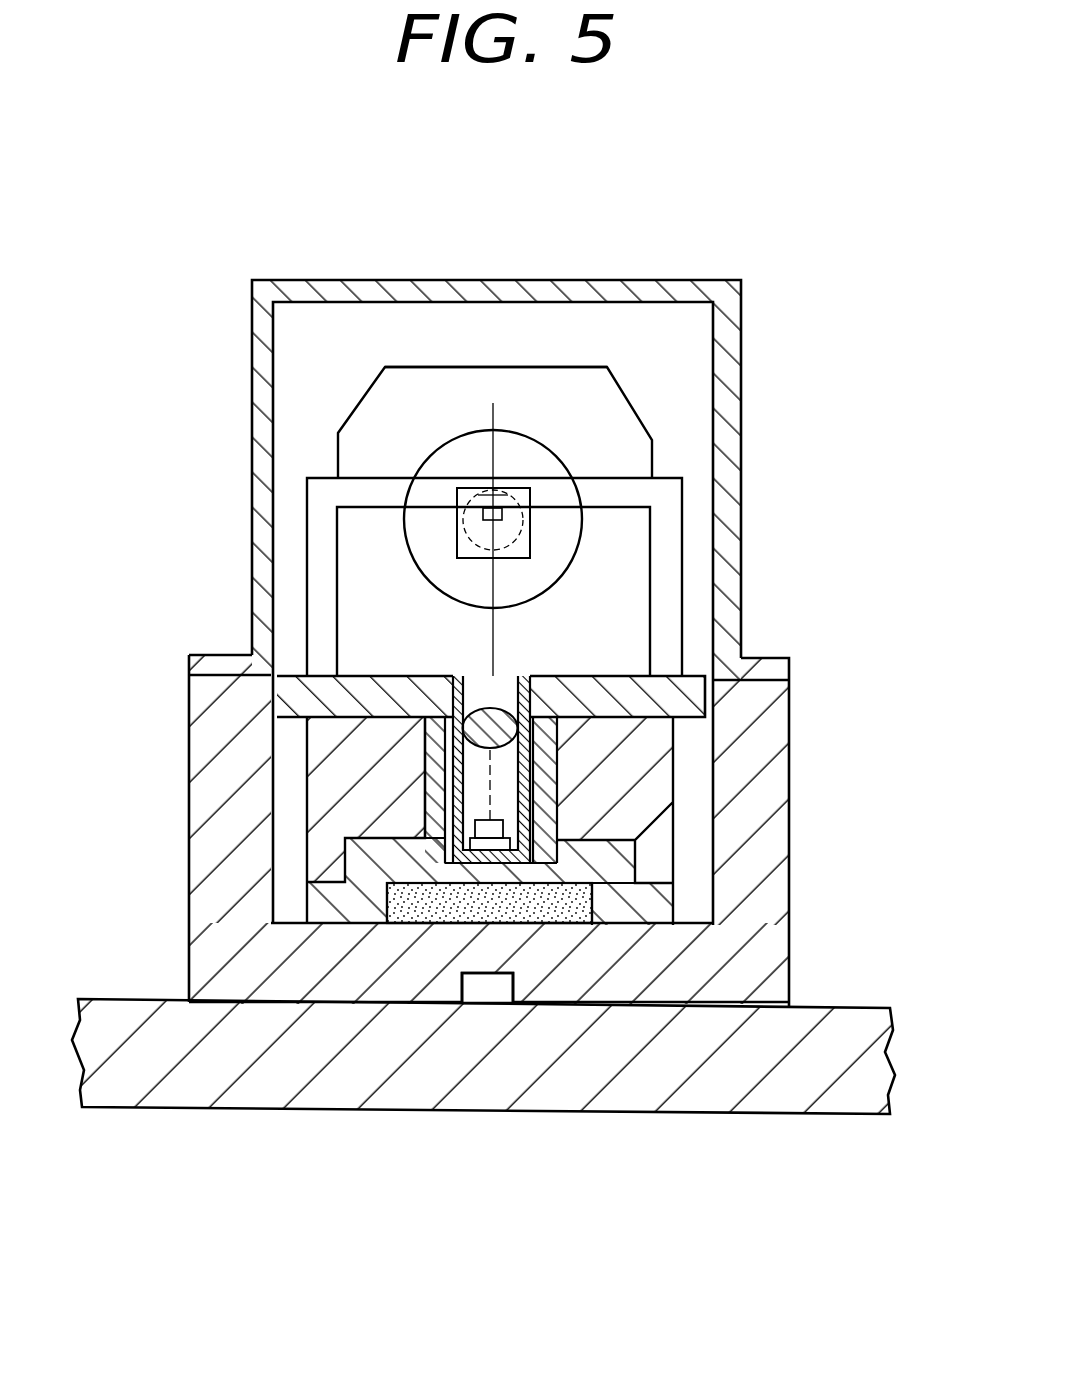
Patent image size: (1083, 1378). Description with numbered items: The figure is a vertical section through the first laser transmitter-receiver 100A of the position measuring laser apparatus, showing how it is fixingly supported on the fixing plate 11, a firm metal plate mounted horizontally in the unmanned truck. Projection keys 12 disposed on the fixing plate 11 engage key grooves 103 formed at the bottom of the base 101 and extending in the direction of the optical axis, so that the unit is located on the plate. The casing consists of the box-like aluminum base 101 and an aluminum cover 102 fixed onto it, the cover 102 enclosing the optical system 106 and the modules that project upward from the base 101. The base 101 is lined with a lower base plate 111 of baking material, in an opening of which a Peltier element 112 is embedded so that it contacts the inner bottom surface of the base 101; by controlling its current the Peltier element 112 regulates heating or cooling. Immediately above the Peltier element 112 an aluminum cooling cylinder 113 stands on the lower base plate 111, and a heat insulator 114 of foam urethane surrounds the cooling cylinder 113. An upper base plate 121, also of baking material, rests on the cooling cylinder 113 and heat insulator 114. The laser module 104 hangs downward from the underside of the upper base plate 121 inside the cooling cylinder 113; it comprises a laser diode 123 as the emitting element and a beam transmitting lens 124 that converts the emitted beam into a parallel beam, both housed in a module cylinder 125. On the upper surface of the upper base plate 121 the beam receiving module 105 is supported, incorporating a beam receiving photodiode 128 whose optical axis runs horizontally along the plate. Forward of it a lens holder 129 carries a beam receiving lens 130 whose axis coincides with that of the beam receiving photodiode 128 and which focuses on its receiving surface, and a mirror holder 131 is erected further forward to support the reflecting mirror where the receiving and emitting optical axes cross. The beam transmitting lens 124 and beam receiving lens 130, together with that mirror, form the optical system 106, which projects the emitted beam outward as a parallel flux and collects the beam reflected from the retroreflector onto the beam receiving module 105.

The first laser transmitter-receiver 100A is at (348, 222).
The fixing plate 11 is at (830, 1087).
The projection key 12 is at (498, 992).
The base 101 is at (765, 887).
The cover 102 is at (723, 442).
The key groove 103 is at (475, 990).
The laser module 104 is at (540, 795).
The beam receiving module 105 is at (448, 535).
The optical system 106 is at (618, 444).
The lower base plate 111 is at (648, 905).
The Peltier element 112 is at (430, 918).
The cooling cylinder 113 is at (542, 758).
The heat insulator 114 is at (617, 822).
The upper base plate 121 is at (668, 702).
The laser diode 123 is at (478, 847).
The beam transmitting lens 124 is at (478, 732).
The module cylinder 125 is at (447, 785).
The beam receiving photodiode 128 is at (482, 513).
The lens holder 129 is at (590, 397).
The beam receiving lens 130 is at (453, 447).
The mirror holder 131 is at (663, 587).